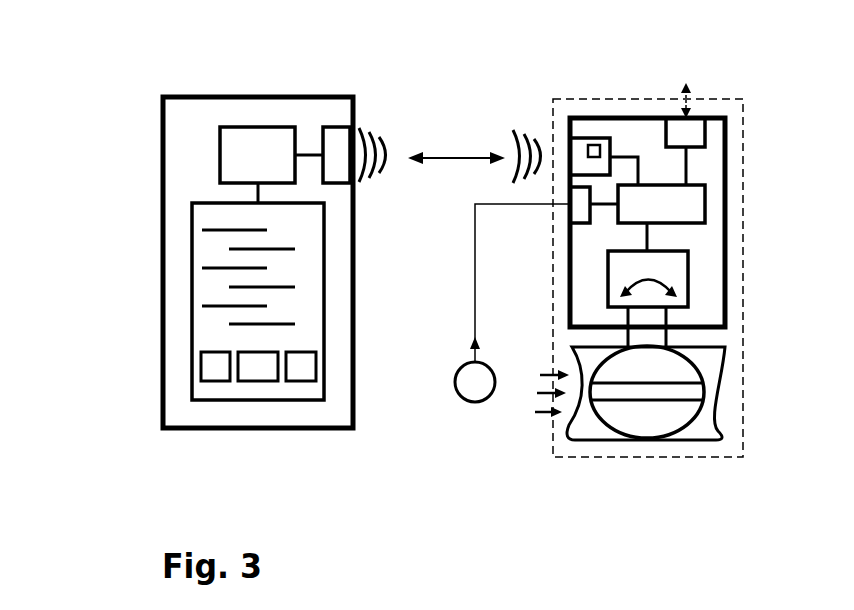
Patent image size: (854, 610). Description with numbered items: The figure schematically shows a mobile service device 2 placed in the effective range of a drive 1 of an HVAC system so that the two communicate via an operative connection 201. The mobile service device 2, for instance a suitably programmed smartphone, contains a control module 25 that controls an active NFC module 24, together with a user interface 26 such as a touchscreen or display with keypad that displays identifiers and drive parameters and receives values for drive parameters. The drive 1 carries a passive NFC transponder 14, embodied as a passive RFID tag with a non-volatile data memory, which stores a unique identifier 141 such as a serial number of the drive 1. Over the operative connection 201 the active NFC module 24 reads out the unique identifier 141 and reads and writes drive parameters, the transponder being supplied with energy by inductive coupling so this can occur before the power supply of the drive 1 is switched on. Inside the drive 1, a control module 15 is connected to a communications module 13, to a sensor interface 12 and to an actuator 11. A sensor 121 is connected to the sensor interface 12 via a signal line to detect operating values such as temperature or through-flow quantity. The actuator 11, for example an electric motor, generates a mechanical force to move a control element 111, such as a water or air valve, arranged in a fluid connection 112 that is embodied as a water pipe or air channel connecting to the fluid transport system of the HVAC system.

The drive 1 is at (733, 519).
The mobile service device 2 is at (268, 497).
The actuator 11 is at (618, 280).
The sensor interface 12 is at (580, 215).
The communications module 13 is at (697, 128).
The passive NFC transponder 14 is at (590, 139).
The control module 15 is at (697, 205).
The active NFC module 24 is at (332, 137).
The control module 25 is at (248, 140).
The user interface 26 is at (203, 210).
The control element 111 is at (658, 420).
The fluid connection 112 is at (593, 420).
The sensor 121 is at (477, 390).
The unique identifier 141 is at (588, 148).
The operative connection 201 is at (474, 164).